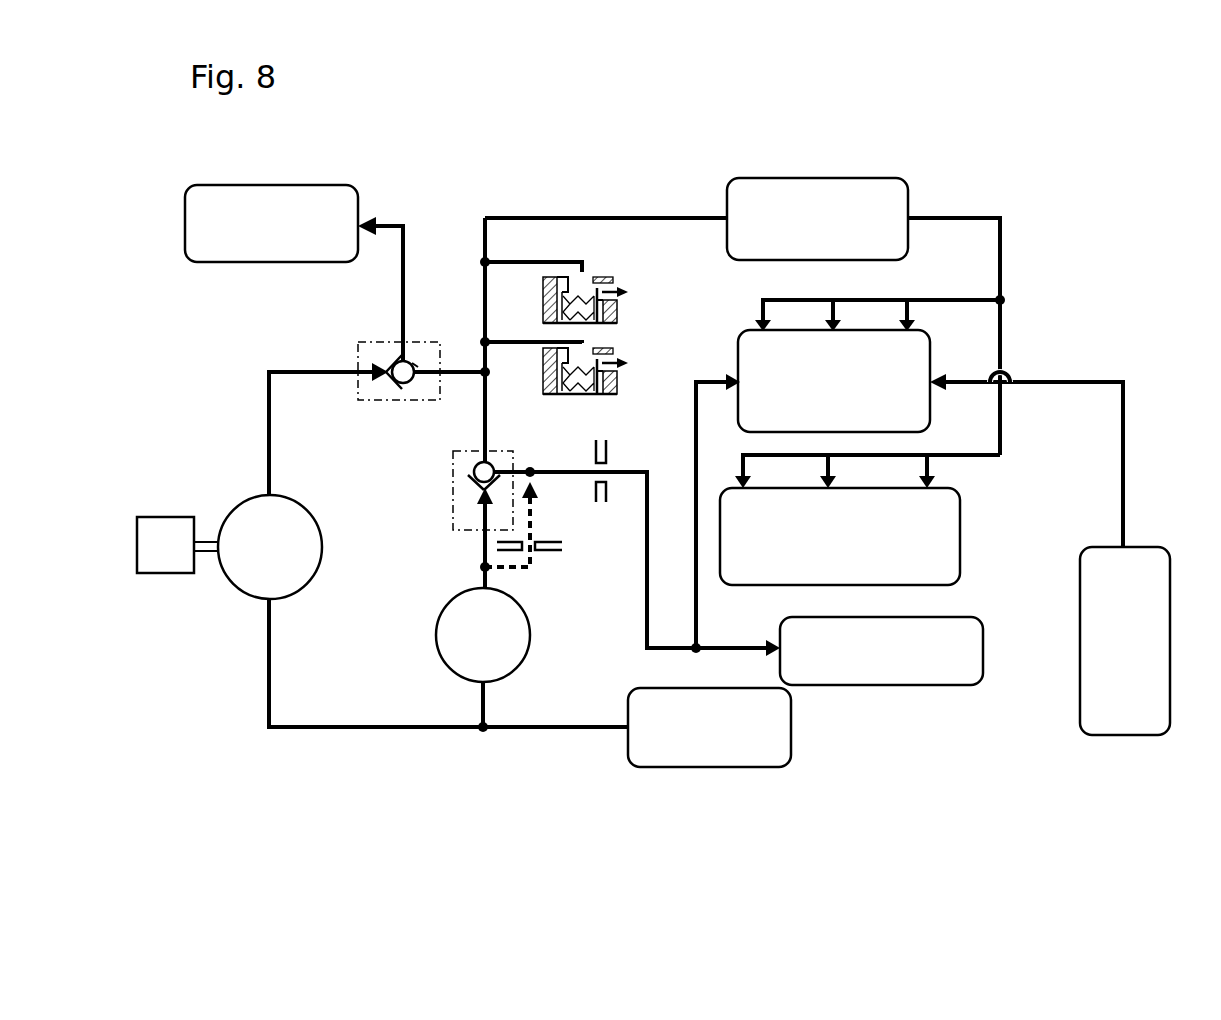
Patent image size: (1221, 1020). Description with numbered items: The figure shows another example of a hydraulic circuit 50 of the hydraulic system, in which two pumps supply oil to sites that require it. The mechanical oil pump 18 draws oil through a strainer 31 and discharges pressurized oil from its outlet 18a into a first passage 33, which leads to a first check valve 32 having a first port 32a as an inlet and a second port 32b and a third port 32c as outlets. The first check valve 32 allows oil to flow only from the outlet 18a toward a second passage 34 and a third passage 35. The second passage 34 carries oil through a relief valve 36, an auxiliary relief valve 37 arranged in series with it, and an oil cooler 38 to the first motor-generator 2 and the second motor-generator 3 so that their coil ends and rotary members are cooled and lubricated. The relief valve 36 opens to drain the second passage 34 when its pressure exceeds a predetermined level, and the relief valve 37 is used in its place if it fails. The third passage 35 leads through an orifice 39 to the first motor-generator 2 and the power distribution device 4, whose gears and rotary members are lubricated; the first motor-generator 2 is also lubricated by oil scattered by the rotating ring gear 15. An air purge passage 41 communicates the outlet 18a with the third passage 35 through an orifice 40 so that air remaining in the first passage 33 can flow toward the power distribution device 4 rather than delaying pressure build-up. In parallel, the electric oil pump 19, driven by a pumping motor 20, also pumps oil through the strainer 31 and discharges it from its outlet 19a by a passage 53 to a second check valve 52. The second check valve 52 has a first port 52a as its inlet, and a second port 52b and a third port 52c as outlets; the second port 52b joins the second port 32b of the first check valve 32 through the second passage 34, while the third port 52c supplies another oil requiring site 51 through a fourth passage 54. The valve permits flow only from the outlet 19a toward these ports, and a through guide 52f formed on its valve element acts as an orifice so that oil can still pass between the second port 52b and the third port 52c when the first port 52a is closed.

The first motor-generator 2 is at (746, 350).
The second motor-generator 3 is at (960, 530).
The power distribution device 4 is at (983, 648).
The ring gear 15 is at (1125, 735).
The mechanical oil pump (MOP) 18 is at (444, 654).
The outlet 18a is at (480, 582).
The electric oil pump (EOP) 19 is at (247, 507).
The outlet 19a is at (273, 495).
The pumping motor 20 is at (163, 573).
The strainer 31 is at (705, 767).
The first check valve 32 is at (472, 476).
The first port 32a is at (476, 490).
The second port 32b is at (472, 462).
The third port 32c is at (526, 444).
The first passage 33 is at (483, 551).
The second passage 34 is at (485, 420).
The third passage 35 is at (565, 476).
The relief valve 36 is at (612, 352).
The relief valve 37 is at (611, 280).
The oil cooler 38 is at (819, 178).
The orifice 39 is at (606, 453).
The orifice 40 is at (550, 553).
The air purge passage 41 is at (528, 570).
The hydraulic circuit 50 is at (491, 190).
The oil requiring site 51 is at (250, 262).
The second check valve 52 is at (405, 363).
The first port 52a is at (393, 386).
The second port 52b is at (411, 384).
The third port 52c is at (408, 357).
The through guide 52f is at (416, 369).
The oil passage 53 is at (268, 408).
The fourth passage 54 is at (408, 236).